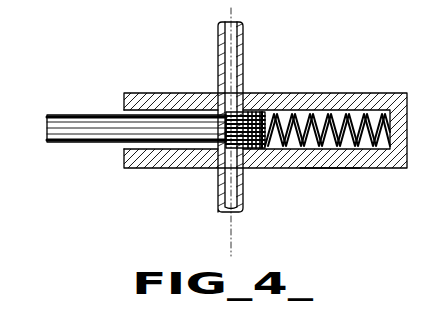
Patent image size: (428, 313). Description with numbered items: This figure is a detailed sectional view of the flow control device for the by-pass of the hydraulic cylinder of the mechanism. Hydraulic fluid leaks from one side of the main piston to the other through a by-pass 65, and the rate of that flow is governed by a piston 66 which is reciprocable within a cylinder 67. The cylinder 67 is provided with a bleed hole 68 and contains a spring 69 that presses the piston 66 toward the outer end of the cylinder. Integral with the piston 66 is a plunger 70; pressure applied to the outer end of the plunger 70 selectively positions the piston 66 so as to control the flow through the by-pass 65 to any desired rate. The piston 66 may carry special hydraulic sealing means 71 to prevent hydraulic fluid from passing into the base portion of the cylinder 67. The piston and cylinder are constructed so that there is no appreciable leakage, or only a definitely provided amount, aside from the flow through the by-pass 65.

The by-pass 65 is at (218, 70).
The piston 66 is at (262, 93).
The cylinder 67 is at (340, 93).
The bleed hole 68 is at (387, 125).
The spring 69 is at (322, 168).
The plunger 70 is at (95, 129).
The hydraulic sealing means 71 is at (258, 150).